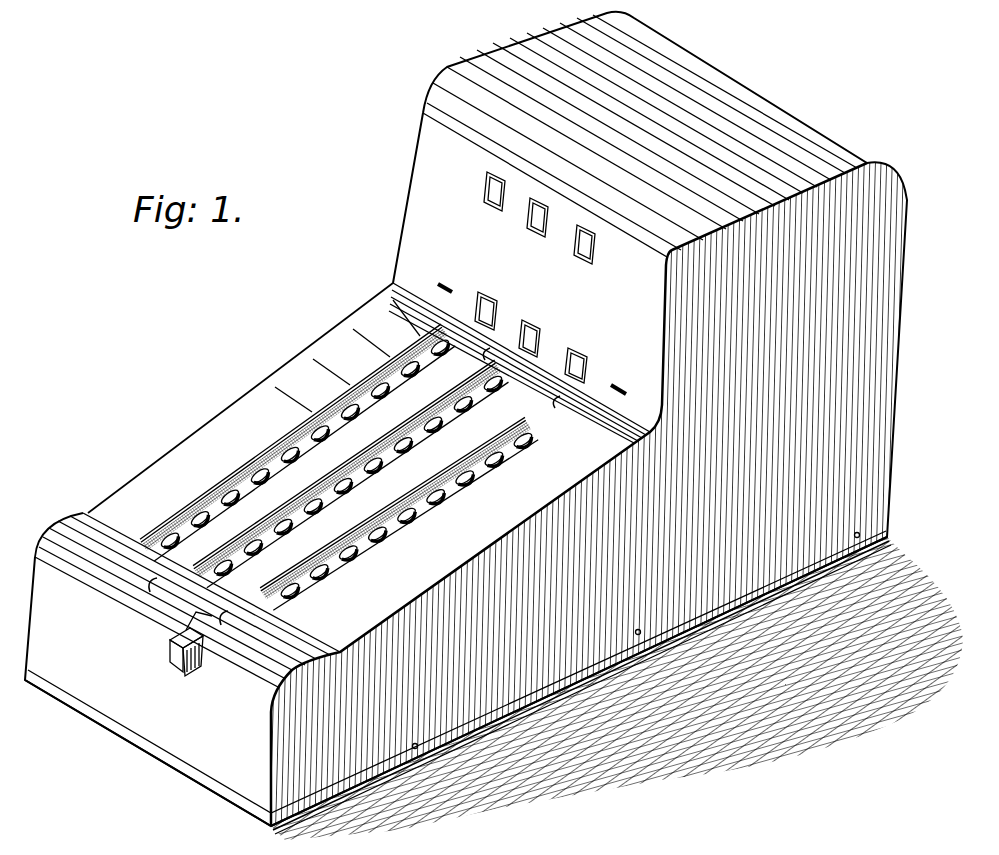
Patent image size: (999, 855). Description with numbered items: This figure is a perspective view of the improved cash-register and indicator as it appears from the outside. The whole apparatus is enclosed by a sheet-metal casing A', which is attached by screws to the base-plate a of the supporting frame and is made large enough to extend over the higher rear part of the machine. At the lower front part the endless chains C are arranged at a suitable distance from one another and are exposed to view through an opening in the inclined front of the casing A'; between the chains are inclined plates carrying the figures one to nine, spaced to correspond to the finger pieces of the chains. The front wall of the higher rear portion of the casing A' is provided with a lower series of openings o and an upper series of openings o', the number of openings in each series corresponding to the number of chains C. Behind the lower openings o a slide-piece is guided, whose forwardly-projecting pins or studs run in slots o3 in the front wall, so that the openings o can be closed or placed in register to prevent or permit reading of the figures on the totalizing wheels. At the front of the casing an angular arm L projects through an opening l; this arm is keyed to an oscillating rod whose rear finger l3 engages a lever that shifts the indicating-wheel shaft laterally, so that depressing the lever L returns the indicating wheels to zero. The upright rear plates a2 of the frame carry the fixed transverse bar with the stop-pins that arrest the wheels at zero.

The casing A' is at (494, 426).
The base-plate a is at (922, 545).
The angular arm L is at (186, 658).
The opening l is at (188, 615).
The endless chains C is at (297, 434).
The upper series of openings o' is at (537, 277).
The lower series of openings o is at (550, 346).
The slots o3 is at (538, 313).
The upright rear plates a2 is at (550, 335).
The finger l3 is at (528, 367).